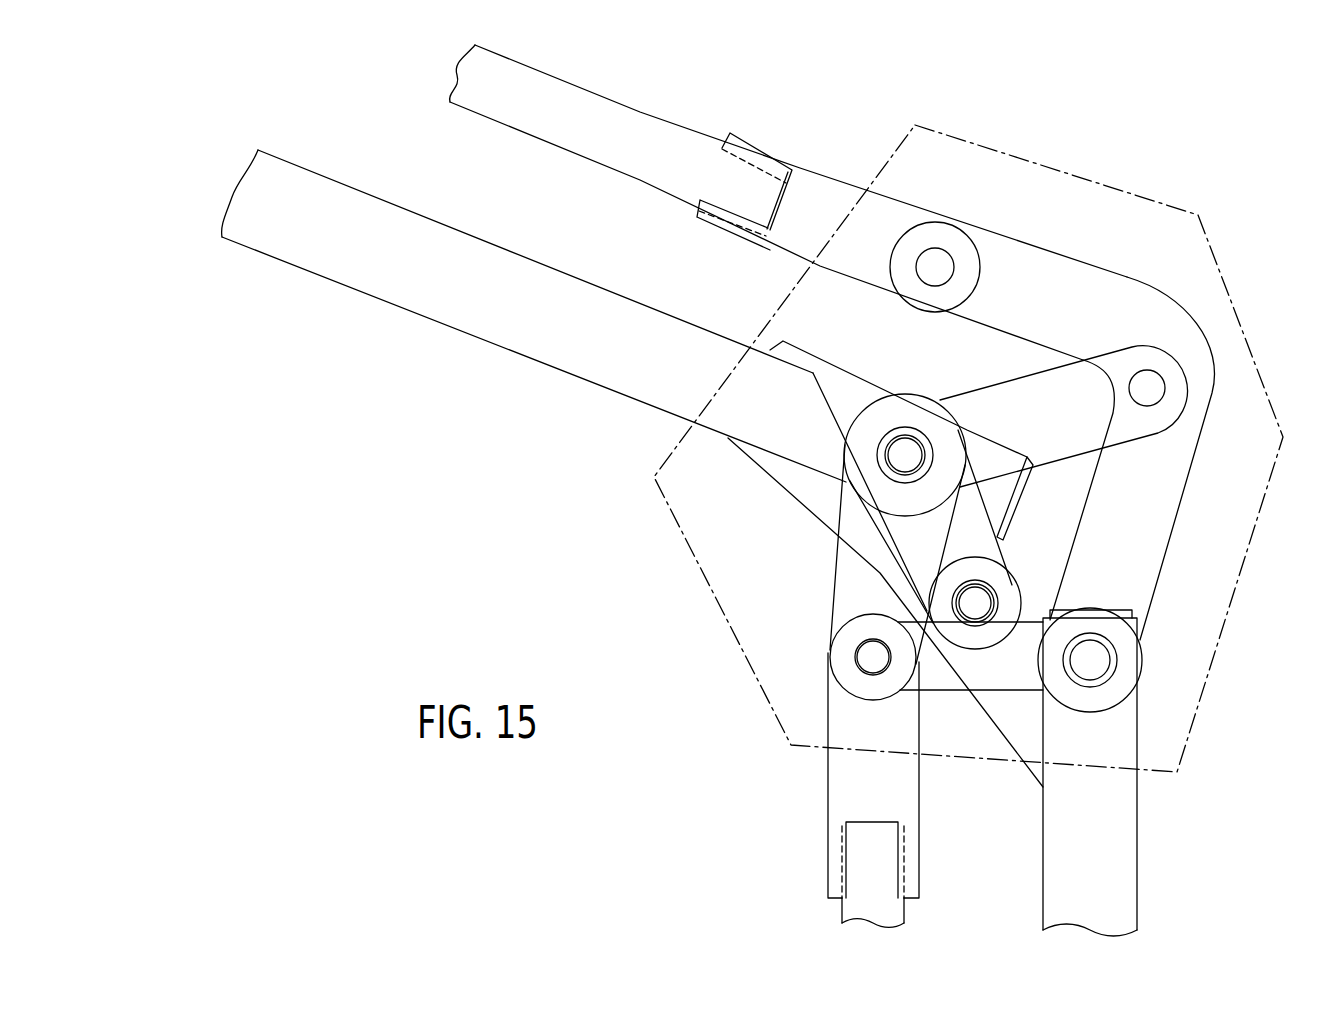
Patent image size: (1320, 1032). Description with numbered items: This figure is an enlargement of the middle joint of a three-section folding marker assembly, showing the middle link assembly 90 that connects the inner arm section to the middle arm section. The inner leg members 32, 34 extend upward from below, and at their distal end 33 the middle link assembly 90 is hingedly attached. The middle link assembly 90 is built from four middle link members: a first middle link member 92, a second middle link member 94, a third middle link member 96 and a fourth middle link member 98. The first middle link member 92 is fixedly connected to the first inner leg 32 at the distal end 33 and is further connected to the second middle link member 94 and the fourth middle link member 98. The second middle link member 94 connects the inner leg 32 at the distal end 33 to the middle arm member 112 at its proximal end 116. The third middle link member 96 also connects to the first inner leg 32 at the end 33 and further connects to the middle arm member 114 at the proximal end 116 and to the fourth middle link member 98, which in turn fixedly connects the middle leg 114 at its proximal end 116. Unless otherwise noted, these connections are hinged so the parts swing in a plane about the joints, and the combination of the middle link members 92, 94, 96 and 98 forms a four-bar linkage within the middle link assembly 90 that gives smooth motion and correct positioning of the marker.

The first inner leg 32 is at (1137, 858).
The distal end 33 is at (828, 708).
The inner leg member 34 is at (842, 906).
The middle link assembly 90 is at (1240, 323).
The first middle link member 92 is at (1010, 693).
The second middle link member 94 is at (836, 597).
The third middle link member 96 is at (990, 383).
The fourth middle link member 98 is at (1172, 542).
The middle arm member 112 is at (483, 340).
The middle arm member 114 is at (597, 164).
The proximal end 116 is at (788, 358).